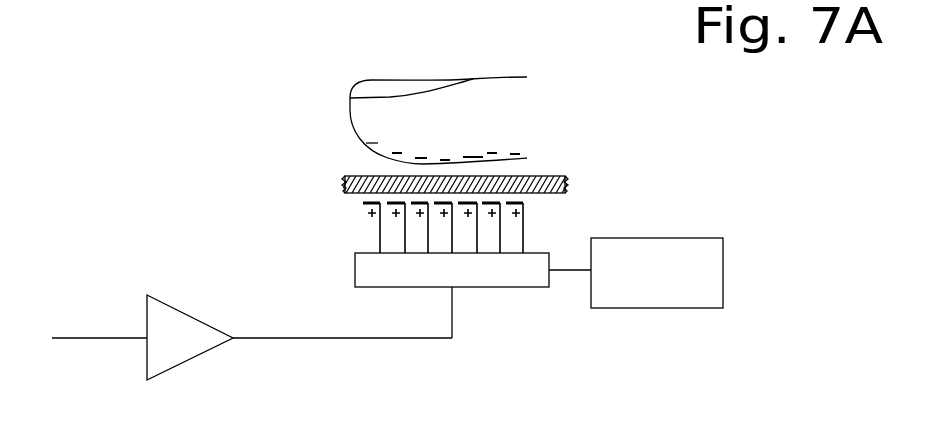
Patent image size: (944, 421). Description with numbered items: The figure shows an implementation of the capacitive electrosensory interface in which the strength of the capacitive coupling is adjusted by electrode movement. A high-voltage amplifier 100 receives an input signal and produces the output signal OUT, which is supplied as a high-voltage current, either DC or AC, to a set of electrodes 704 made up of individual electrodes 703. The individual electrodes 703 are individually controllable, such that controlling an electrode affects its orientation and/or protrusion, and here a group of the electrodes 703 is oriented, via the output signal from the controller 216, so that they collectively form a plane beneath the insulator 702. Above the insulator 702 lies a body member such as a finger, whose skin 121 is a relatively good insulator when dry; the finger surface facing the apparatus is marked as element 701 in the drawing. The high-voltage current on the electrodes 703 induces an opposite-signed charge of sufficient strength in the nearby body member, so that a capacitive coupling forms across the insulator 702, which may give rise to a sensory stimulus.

The skin 121 is at (350, 99).
The finger skin / contact surface 701 is at (346, 143).
The insulator 702 is at (333, 183).
The individual electrodes 703 is at (356, 212).
The set of electrodes 704 is at (355, 266).
The controller 216 is at (660, 308).
The high-voltage amplifier 100 is at (197, 318).